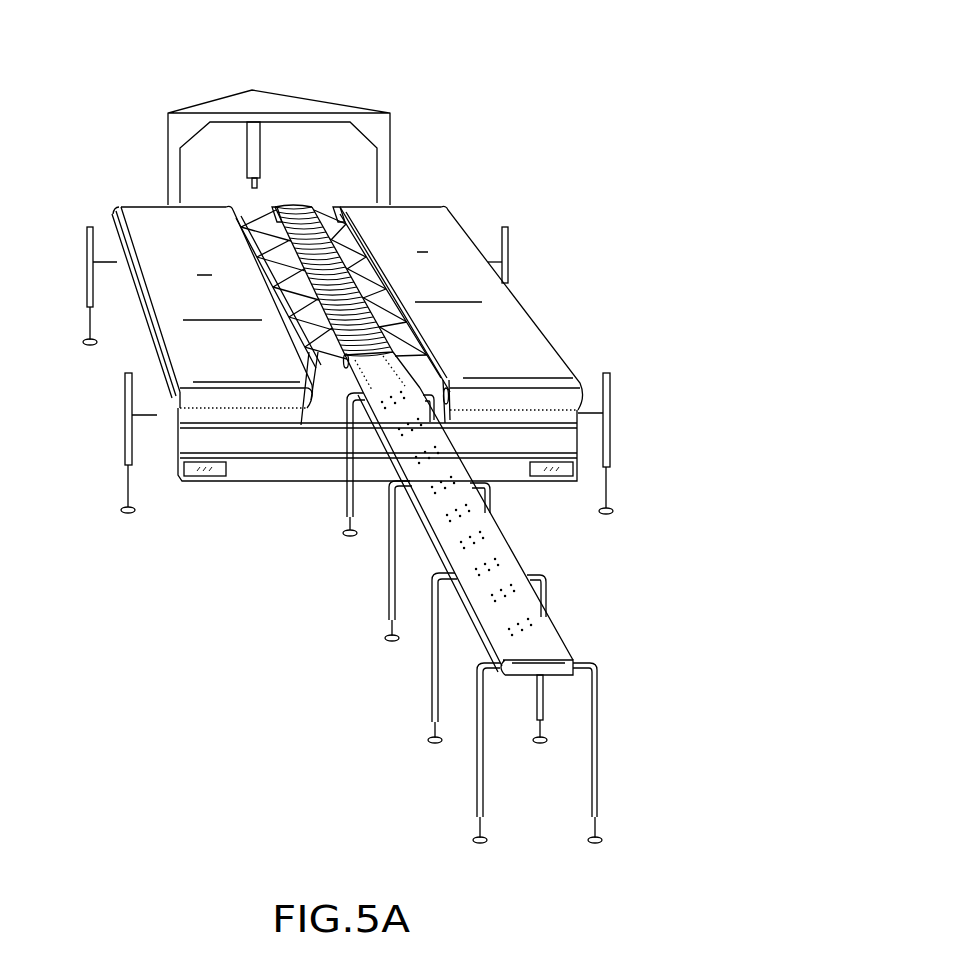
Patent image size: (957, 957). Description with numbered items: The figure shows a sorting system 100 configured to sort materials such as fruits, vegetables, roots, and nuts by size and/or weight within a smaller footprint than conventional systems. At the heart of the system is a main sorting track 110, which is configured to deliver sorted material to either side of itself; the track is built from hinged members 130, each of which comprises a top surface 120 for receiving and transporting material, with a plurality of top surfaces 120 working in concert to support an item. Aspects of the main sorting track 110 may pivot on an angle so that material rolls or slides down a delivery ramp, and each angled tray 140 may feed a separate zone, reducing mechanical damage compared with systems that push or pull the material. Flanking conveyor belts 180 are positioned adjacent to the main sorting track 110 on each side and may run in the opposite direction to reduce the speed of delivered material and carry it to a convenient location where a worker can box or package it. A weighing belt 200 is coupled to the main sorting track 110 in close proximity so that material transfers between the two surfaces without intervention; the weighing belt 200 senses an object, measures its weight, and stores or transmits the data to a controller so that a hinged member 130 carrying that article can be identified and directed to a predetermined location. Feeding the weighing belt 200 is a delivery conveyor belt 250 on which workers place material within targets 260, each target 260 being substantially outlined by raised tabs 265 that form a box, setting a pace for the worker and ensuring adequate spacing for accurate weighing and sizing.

The sorting system 100 is at (453, 59).
The main sorting track 110 is at (295, 205).
The top surface 120 is at (358, 234).
The hinged member 130 is at (367, 318).
The angled tray 140 is at (317, 355).
The flanking conveyor belt 180 is at (548, 360).
The weighing belt 200 is at (390, 378).
The delivery conveyor belt 250 is at (503, 565).
The target 260 is at (536, 625).
The raised tab 265 is at (488, 538).